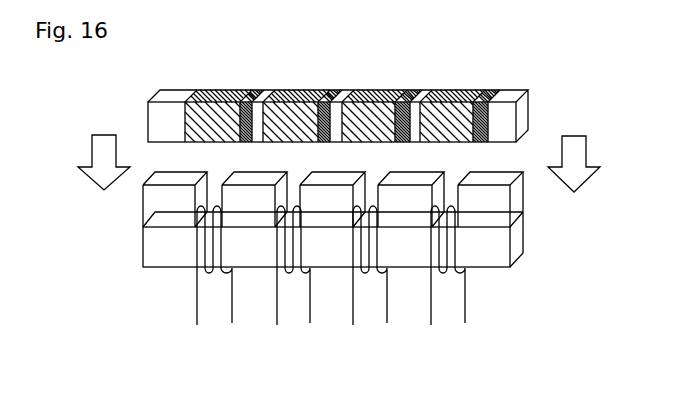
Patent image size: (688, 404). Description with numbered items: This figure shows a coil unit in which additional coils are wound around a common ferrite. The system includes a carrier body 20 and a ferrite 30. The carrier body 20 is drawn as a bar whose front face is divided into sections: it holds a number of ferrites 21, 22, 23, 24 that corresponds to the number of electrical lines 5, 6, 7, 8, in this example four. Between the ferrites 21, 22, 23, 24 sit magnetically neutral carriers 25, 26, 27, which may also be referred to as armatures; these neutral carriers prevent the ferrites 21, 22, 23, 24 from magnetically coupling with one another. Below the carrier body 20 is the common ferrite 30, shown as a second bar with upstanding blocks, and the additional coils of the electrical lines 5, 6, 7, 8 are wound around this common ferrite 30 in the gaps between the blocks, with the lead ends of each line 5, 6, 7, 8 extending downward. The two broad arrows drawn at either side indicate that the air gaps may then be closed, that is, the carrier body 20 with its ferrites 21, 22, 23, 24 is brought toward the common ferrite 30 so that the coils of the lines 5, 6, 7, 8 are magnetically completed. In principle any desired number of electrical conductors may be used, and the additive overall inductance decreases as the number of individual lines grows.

The carrier body 20 is at (367, 83).
The ferrite 21 is at (455, 89).
The ferrite 22 is at (368, 89).
The ferrite 23 is at (290, 89).
The ferrite 24 is at (207, 89).
The magnetically neutral carrier 25 is at (413, 89).
The magnetically neutral carrier 26 is at (339, 89).
The magnetically neutral carrier 27 is at (255, 89).
The ferrite 30 is at (522, 247).
The electrical line 5 is at (197, 315).
The electrical line 6 is at (277, 312).
The electrical line 7 is at (353, 312).
The electrical line 8 is at (431, 306).